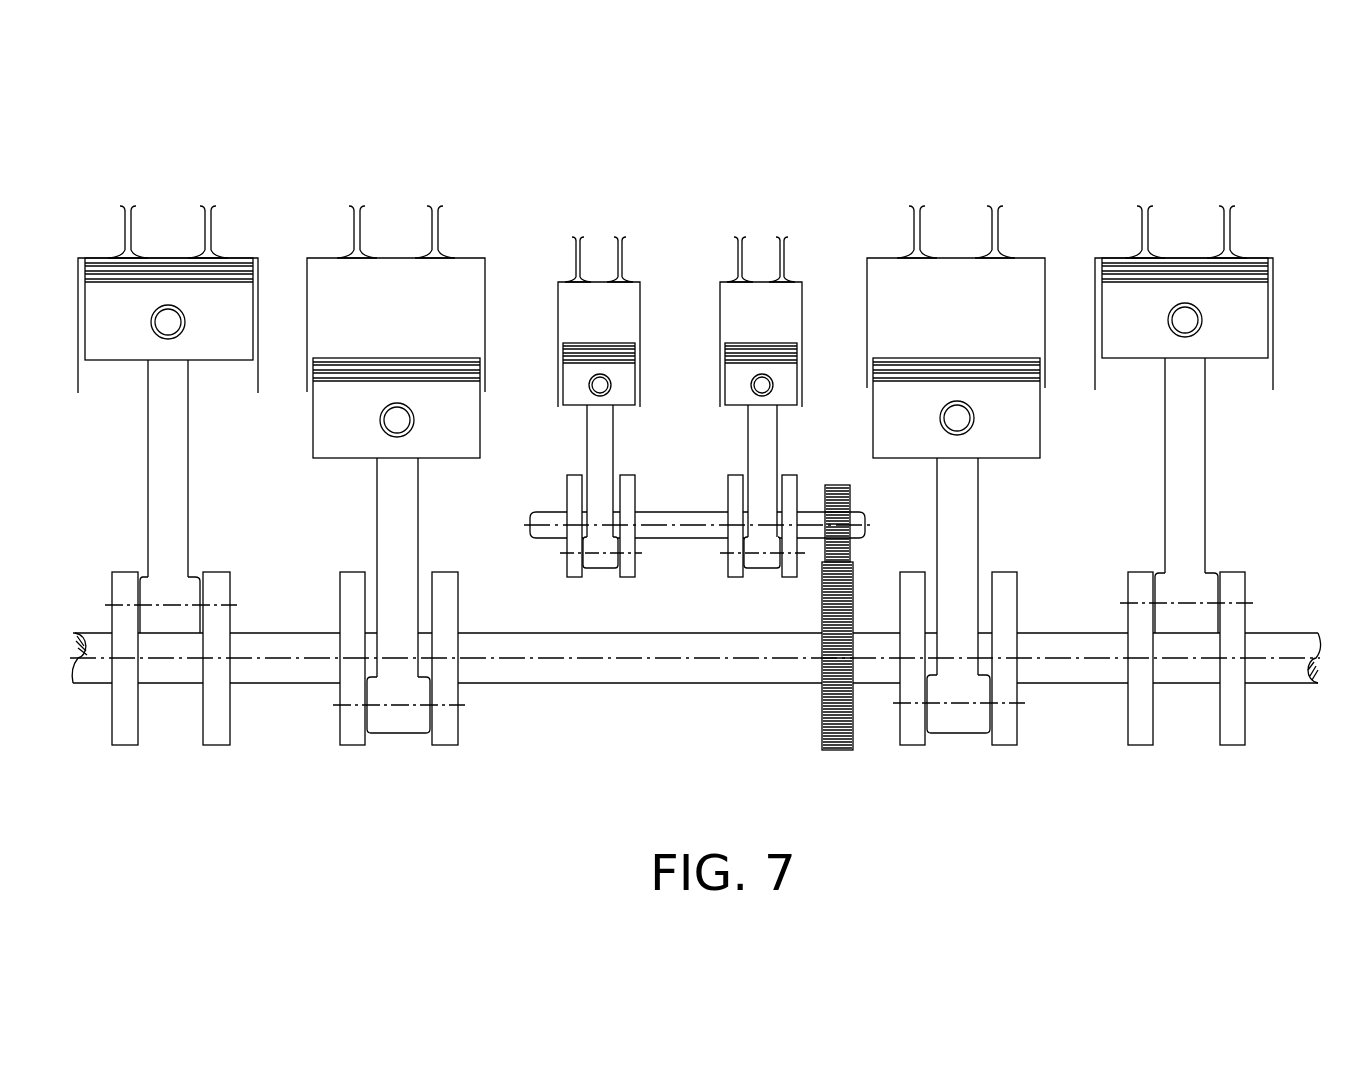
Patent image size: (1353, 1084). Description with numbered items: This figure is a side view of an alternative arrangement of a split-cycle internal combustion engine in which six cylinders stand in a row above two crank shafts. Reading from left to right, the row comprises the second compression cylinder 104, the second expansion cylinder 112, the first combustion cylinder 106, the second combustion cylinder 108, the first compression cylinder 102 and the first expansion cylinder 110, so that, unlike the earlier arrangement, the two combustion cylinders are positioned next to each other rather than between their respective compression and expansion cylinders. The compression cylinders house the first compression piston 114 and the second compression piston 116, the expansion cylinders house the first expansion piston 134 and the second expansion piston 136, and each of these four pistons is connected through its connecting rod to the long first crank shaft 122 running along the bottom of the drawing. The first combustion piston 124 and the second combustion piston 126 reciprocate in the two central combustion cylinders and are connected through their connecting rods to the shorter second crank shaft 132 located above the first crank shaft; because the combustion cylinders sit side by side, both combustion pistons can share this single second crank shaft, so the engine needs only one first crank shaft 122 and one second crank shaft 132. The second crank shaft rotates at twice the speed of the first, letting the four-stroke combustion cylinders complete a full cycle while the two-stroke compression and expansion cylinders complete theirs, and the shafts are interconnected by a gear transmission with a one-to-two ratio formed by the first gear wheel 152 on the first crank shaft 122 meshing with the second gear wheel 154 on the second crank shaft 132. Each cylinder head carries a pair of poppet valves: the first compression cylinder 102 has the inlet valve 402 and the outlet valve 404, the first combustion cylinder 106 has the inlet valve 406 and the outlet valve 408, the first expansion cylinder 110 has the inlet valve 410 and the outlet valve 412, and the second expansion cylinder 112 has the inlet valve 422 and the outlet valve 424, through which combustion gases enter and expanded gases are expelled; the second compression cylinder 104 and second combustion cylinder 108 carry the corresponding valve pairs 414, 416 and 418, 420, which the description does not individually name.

The first compression cylinder 102 is at (1047, 287).
The second compression cylinder 104 is at (260, 287).
The first combustion cylinder 106 is at (803, 305).
The second combustion cylinder 108 is at (641, 305).
The first expansion cylinder 110 is at (1275, 287).
The second expansion cylinder 112 is at (487, 287).
The first compression piston 114 is at (1013, 440).
The second compression piston 116 is at (218, 355).
The first crank shaft 122 is at (697, 668).
The first combustion piston 124 is at (738, 392).
The second combustion piston 126 is at (577, 392).
The second crank shaft 132 is at (548, 533).
The first expansion piston 134 is at (1235, 350).
The second expansion piston 136 is at (445, 440).
The first gear wheel 152 is at (836, 750).
The second gear wheel 154 is at (836, 485).
The inlet valve 402 is at (922, 222).
The outlet valve 404 is at (1000, 222).
The inlet valve 406 is at (744, 245).
The outlet valve 408 is at (786, 250).
The inlet valve 410 is at (1150, 222).
The outlet valve 412 is at (1232, 222).
The valve 414 is at (133, 222).
The valve 416 is at (213, 222).
The valve 418 is at (582, 245).
The valve 420 is at (624, 250).
The inlet valve 422 is at (362, 222).
The outlet valve 424 is at (440, 222).